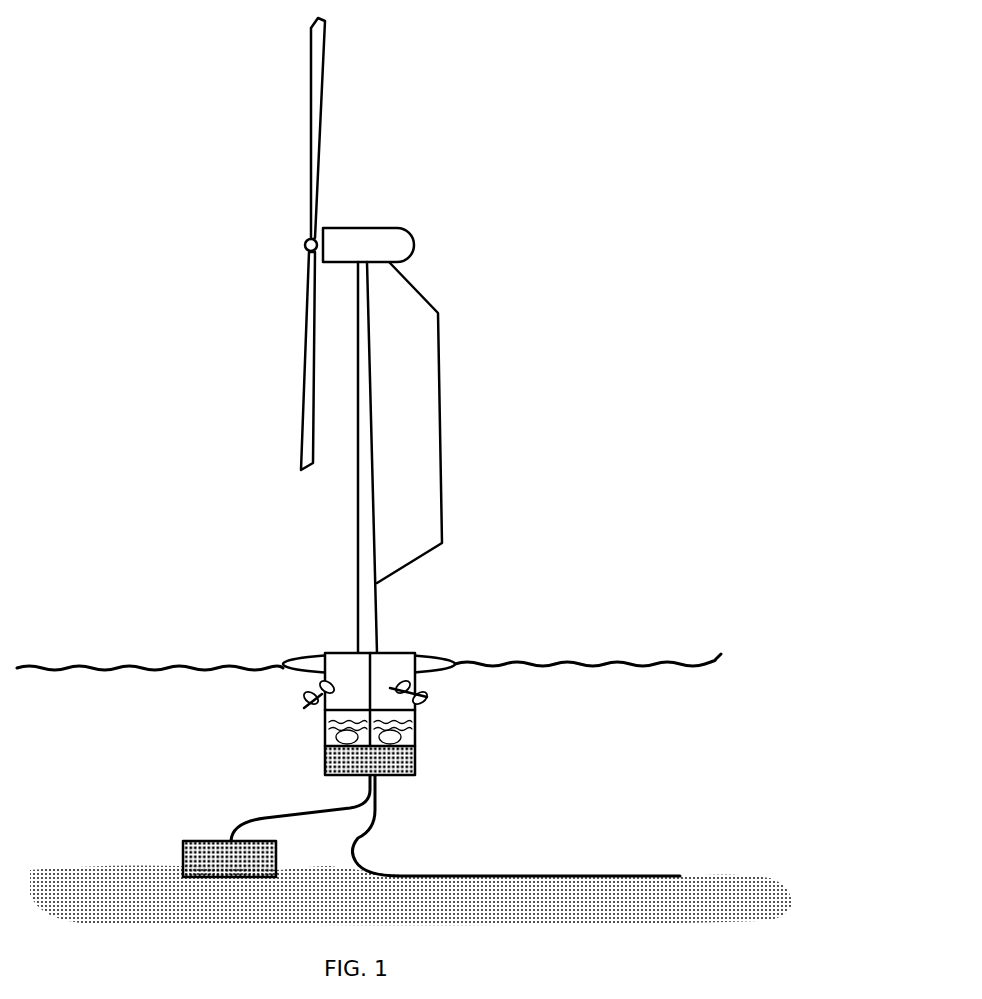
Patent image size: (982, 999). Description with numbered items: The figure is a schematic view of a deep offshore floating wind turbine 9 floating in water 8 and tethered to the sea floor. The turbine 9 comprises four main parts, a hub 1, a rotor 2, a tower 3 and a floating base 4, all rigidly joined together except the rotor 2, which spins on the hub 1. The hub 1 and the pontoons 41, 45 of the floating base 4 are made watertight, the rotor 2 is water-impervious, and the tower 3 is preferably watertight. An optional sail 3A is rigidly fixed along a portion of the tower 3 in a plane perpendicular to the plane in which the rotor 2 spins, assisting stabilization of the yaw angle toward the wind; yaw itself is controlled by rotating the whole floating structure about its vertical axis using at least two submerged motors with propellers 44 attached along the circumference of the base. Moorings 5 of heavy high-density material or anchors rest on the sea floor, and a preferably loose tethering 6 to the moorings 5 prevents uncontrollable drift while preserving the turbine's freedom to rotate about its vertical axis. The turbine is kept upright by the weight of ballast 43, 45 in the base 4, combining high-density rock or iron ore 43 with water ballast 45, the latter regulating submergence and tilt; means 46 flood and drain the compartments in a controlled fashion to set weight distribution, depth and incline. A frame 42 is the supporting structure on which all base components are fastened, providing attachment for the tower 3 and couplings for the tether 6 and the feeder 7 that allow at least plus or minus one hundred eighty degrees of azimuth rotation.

The hub 1 is at (402, 248).
The rotor 2 is at (320, 123).
The tower 3 is at (363, 519).
The sail 3A is at (415, 420).
The floating base 4 is at (428, 642).
The moorings 5 is at (183, 843).
The tethering 6 is at (233, 838).
The feeder 7 is at (417, 868).
The water 8 is at (173, 658).
The turbine 9 is at (122, 325).
The pontoons 41 is at (351, 670).
The frame 42 is at (323, 713).
The ballast 43 is at (417, 763).
The motors with propellers 44 is at (427, 697).
The water ballast 45 is at (325, 730).
The means to flood and drain 46 is at (417, 738).